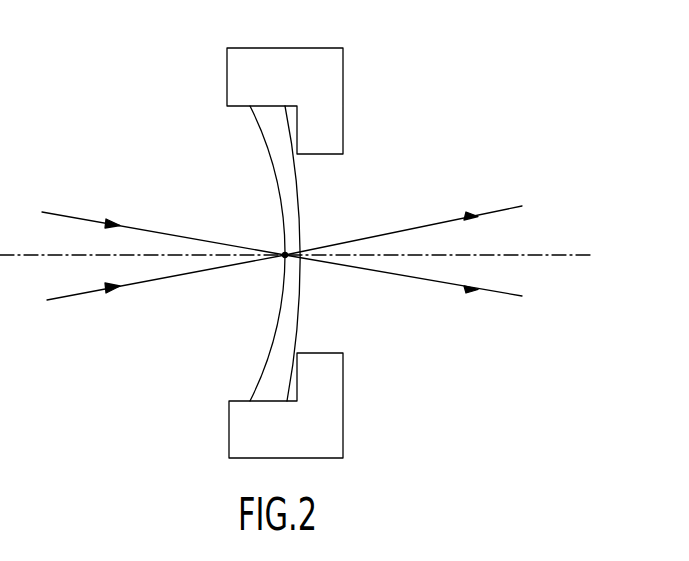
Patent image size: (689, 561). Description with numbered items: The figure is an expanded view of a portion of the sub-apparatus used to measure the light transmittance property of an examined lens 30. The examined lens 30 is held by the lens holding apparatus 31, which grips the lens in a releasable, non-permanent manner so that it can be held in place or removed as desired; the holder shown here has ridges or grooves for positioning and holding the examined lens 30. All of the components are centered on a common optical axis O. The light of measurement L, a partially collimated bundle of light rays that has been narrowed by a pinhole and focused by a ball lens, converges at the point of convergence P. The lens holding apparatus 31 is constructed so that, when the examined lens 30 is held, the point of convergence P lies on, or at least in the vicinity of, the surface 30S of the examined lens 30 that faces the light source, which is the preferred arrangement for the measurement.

The lens holding apparatus 31 is at (343, 97).
The examined lens 30 is at (238, 253).
The surface of the examined lens 30S is at (272, 173).
The point of convergence P is at (285, 256).
The light of measurement L is at (80, 297).
The optical axis O is at (565, 255).